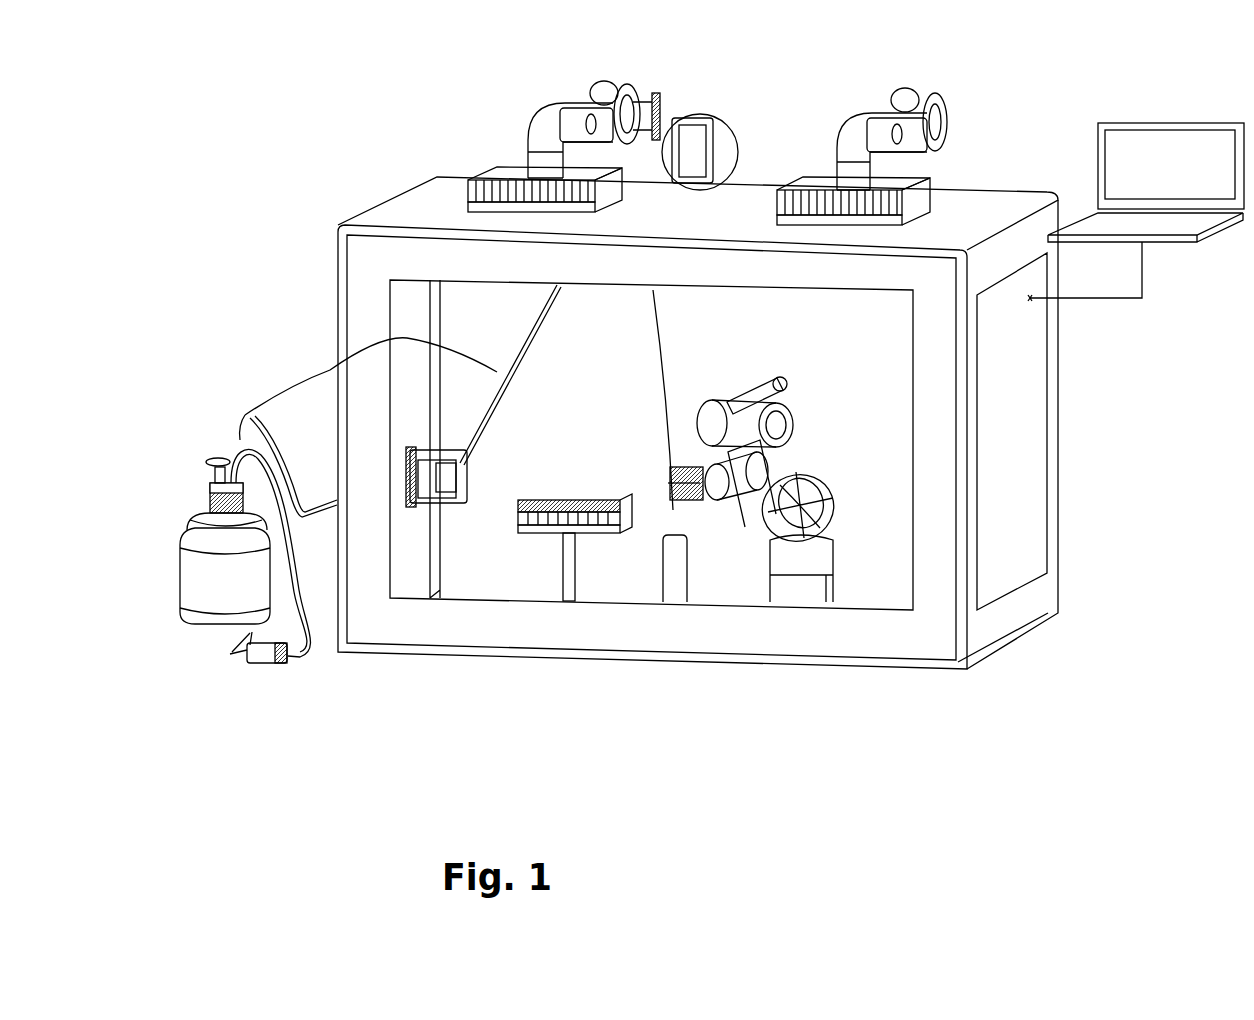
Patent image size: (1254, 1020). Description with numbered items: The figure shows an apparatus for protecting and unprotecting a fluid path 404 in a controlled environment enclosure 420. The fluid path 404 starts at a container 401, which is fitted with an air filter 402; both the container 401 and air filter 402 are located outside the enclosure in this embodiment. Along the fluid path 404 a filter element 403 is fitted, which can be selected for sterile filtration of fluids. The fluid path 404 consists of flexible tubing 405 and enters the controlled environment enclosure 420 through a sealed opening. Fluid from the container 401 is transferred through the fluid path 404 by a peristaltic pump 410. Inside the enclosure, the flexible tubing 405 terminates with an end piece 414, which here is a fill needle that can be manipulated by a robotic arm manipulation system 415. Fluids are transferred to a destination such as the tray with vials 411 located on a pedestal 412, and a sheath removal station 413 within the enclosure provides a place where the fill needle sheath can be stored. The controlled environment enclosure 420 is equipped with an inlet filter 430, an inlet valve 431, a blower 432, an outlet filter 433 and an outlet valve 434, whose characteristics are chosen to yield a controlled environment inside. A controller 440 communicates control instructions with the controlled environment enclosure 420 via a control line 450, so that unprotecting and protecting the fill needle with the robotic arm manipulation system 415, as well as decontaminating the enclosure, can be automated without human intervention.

The container 401 is at (190, 560).
The air filter 402 is at (207, 465).
The filter element 403 is at (265, 663).
The fluid path 404 is at (245, 415).
The flexible tubing 405 is at (530, 325).
The peristaltic pump 410 is at (440, 450).
The tray with vials 411 is at (518, 510).
The pedestal 412 is at (563, 565).
The sheath removal station 413 is at (677, 587).
The end piece 414 is at (677, 510).
The robotic arm manipulation system 415 is at (808, 590).
The controlled environment enclosure 420 is at (338, 285).
The inlet filter 430 is at (470, 182).
The inlet valve 431 is at (615, 100).
The blower 432 is at (700, 112).
The outlet filter 433 is at (763, 190).
The outlet valve 434 is at (912, 88).
The controller 440 is at (1106, 122).
The control line 450 is at (1078, 302).